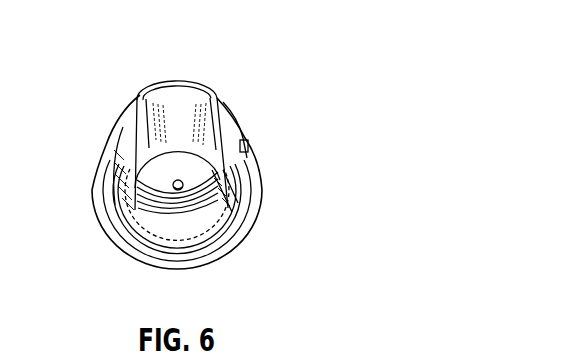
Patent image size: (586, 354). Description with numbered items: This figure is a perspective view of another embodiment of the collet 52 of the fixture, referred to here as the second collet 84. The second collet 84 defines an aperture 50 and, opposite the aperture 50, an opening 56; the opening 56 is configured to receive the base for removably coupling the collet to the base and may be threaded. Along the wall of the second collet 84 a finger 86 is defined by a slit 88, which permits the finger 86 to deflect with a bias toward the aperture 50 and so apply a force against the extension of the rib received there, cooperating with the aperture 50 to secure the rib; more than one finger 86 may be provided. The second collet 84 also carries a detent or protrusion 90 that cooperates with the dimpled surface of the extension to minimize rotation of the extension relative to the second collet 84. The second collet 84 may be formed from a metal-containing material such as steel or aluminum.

The aperture 50 is at (172, 106).
The collet 52 is at (279, 170).
The opening 56 is at (186, 188).
The second collet 84 is at (279, 116).
The finger 86 is at (133, 180).
The slit 88 is at (142, 110).
The protrusion 90 is at (224, 137).